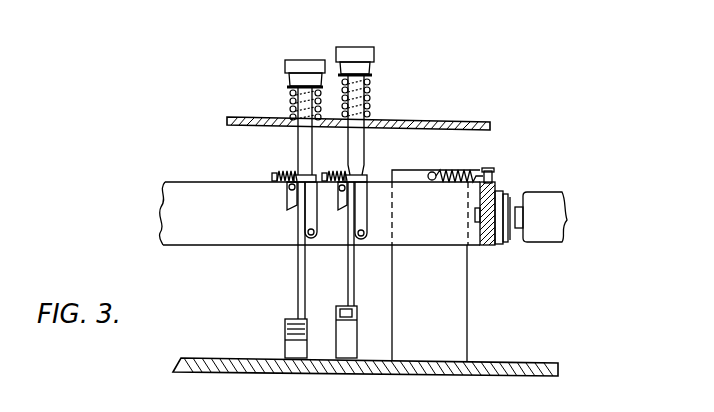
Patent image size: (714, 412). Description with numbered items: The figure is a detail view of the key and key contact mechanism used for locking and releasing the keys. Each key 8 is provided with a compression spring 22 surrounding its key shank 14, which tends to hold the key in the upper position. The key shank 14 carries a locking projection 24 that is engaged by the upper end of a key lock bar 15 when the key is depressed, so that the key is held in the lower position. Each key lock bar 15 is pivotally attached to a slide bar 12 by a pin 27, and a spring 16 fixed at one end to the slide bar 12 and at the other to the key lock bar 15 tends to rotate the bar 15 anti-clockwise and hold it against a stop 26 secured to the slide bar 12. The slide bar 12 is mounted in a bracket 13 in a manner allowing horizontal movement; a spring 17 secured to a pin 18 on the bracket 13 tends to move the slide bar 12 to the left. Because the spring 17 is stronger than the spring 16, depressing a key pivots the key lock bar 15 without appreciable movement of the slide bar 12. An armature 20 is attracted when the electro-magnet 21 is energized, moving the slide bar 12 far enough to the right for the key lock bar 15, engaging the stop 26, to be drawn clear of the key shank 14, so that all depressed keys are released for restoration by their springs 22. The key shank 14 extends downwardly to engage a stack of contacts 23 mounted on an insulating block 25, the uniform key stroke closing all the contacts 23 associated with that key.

The key 8 is at (354, 50).
The compression spring 22 is at (372, 102).
The key shank 14 is at (361, 150).
The spring 16 is at (282, 172).
The slide bar 12 is at (200, 232).
The locking projection 24 is at (309, 189).
The stop 26 is at (343, 208).
The key lock bar 15 is at (364, 233).
The pin 27 is at (361, 243).
The insulating block 25 is at (344, 347).
The contact 23 is at (357, 316).
The bracket 13 is at (468, 304).
The spring 17 is at (461, 171).
The pin 18 is at (497, 181).
The armature 20 is at (507, 241).
The electro-magnet 21 is at (544, 195).